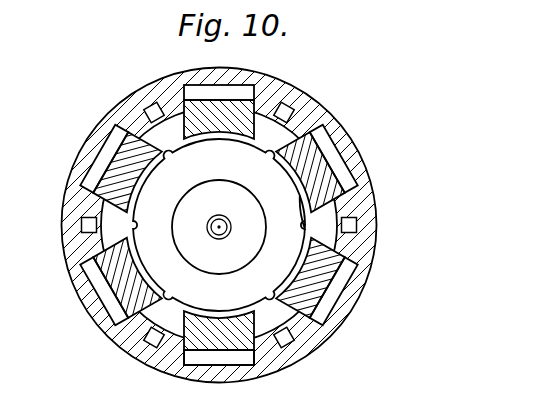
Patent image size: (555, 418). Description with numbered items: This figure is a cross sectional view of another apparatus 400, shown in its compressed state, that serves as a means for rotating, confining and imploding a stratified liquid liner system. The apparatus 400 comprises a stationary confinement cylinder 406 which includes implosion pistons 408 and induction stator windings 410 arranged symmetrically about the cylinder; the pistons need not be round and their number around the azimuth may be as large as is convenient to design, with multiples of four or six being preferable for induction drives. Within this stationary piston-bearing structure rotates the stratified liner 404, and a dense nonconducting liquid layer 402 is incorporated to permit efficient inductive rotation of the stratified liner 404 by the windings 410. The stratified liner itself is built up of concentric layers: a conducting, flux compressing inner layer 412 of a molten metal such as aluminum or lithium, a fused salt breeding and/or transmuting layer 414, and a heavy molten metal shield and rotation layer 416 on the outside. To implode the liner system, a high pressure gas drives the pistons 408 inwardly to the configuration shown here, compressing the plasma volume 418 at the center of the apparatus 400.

The means for rotating, confining and imploding a stratified liner system 400 is at (219, 211).
The dense nonconducting liquid layer 402 is at (219, 361).
The stratified liner 404 is at (277, 227).
The stationary confinement cylinder 406 is at (215, 384).
The implosion pistons 408 is at (209, 229).
The induction stator windings 410 is at (188, 235).
The conducting, flux compressing inner layer 412 is at (232, 191).
The fused salt breeding and/or transmuting layer 414 is at (216, 218).
The heavy molten metal shield and rotation layer 416 is at (251, 266).
The plasma volume 418 is at (208, 259).